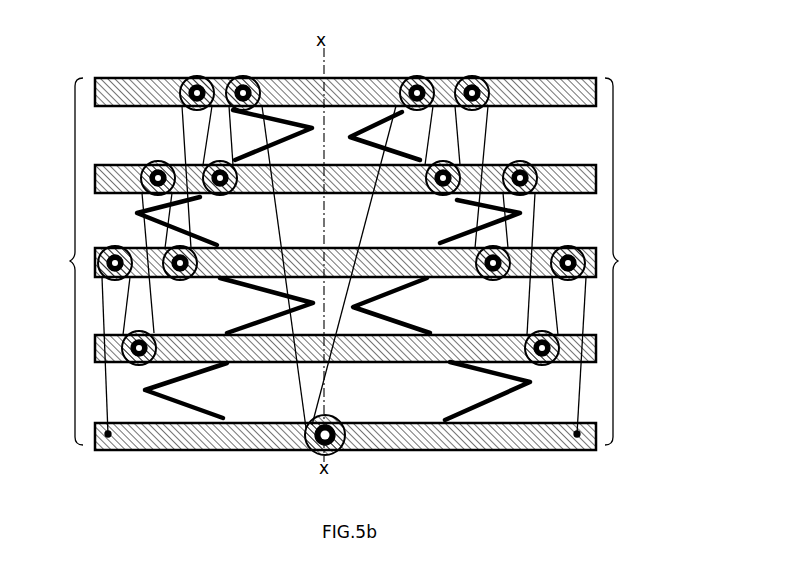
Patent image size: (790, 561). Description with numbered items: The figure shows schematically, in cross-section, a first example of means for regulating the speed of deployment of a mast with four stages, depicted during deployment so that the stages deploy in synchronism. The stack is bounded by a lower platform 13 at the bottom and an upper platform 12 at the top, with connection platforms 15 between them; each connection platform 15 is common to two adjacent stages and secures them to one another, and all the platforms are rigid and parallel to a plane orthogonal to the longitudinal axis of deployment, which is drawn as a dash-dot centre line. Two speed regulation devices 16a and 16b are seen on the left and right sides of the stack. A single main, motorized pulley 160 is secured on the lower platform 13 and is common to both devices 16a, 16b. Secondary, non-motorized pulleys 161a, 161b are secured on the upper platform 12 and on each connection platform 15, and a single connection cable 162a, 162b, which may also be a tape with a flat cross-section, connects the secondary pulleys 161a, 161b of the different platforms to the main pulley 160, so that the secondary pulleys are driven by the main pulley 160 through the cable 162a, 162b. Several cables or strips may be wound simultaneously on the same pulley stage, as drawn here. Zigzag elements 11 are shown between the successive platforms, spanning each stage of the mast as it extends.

The spring 11 is at (333, 263).
The upper platform 12 is at (345, 62).
The lower platform 13 is at (345, 461).
The connection platform 15 is at (345, 241).
The speed regulation device 16a is at (55, 261).
The speed regulation device 16b is at (632, 261).
The main motorized pulley 160 is at (340, 457).
The secondary pulley 161a is at (223, 222).
The secondary pulley 161b is at (452, 250).
The connection cable 162a is at (163, 313).
The connection cable 162b is at (577, 313).